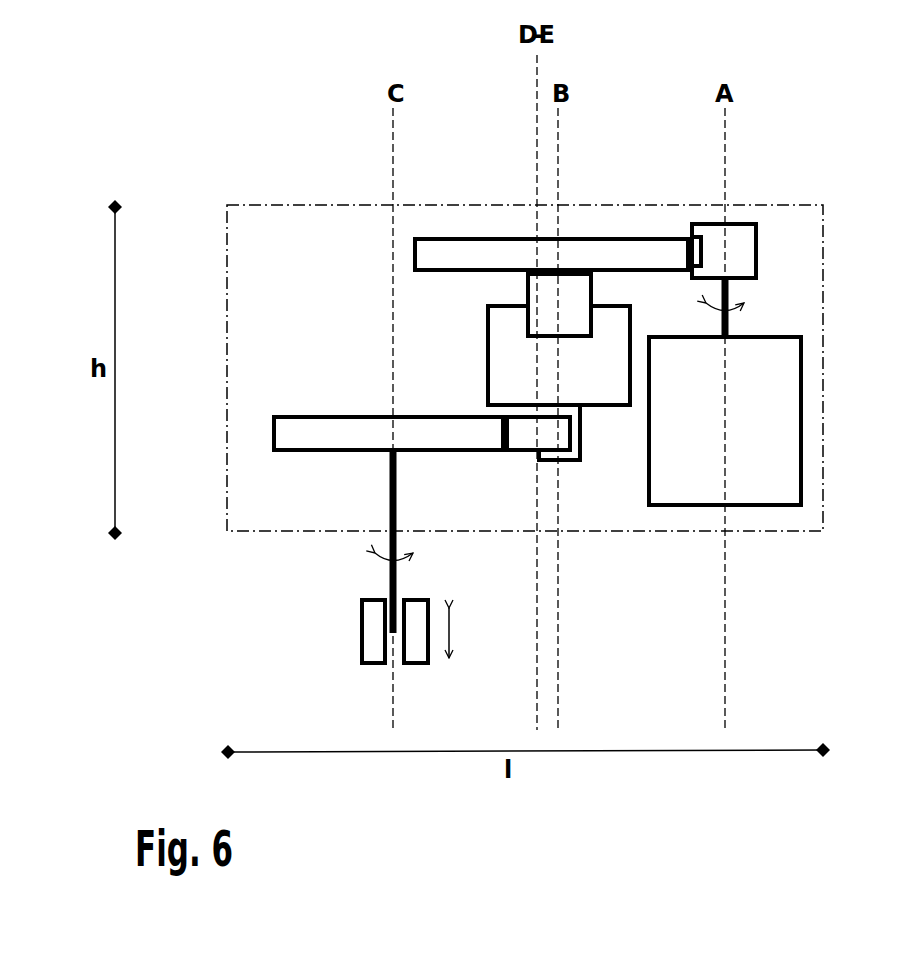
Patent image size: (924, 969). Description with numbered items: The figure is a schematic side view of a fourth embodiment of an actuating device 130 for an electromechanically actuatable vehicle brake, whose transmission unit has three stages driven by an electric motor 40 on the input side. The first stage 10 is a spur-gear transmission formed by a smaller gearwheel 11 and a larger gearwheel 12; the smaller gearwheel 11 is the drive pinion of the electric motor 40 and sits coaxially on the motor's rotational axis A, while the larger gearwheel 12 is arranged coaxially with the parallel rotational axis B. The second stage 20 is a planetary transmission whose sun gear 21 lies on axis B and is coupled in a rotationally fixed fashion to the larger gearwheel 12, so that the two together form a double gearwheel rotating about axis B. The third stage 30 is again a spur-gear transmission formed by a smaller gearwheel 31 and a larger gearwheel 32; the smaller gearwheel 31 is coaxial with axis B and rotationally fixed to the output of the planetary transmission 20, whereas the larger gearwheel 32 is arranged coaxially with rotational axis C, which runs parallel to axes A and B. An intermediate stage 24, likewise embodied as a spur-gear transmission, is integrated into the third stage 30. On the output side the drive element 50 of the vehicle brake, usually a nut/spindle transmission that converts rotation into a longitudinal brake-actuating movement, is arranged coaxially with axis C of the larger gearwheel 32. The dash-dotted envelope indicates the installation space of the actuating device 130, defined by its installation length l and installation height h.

The first stage 10 is at (686, 256).
The smaller gearwheel 11 is at (747, 243).
The larger gearwheel 12 is at (425, 246).
The second stage 20 is at (505, 372).
The sun gear 21 is at (548, 285).
The intermediate stage 24 is at (521, 445).
The third stage 30 is at (496, 433).
The smaller gearwheel 31 is at (580, 464).
The larger gearwheel 32 is at (460, 440).
The electric motor 40 is at (680, 472).
The drive element 50 is at (345, 642).
The actuating device 130 is at (823, 536).